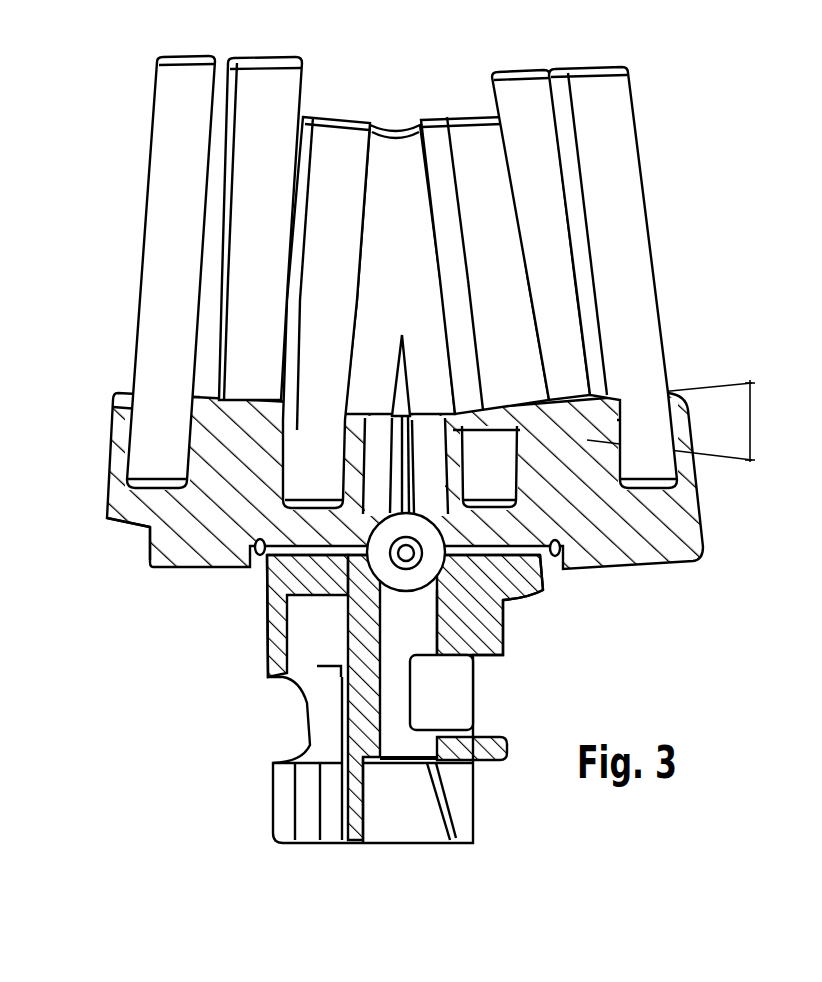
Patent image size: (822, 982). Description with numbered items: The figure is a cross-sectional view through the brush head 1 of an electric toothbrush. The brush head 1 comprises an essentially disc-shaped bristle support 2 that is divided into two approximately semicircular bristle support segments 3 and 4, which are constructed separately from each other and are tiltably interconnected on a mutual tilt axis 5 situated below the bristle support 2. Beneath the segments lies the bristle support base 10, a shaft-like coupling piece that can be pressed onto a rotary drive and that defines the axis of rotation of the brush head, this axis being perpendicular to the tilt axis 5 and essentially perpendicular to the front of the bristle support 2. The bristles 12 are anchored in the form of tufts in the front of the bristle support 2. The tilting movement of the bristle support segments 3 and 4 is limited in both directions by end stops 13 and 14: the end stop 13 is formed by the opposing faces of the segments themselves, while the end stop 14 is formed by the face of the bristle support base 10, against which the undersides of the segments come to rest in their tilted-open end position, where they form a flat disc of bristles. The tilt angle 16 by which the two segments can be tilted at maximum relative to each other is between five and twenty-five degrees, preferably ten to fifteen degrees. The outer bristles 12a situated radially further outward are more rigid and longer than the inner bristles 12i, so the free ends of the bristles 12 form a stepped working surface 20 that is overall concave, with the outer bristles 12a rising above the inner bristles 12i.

The brush head 1 is at (696, 238).
The bristle support 2 is at (722, 497).
The bristle support segment 3 is at (647, 553).
The bristle support segment 4 is at (117, 519).
The tilt axis 5 is at (406, 557).
The bristle support base 10 is at (487, 635).
The bristles 12 is at (165, 262).
The outer bristles 12a is at (614, 103).
The inner bristles 12i is at (330, 142).
The end stop 13 is at (408, 413).
The end stop 14 is at (540, 597).
The tilt angle 16 is at (752, 420).
The working surface 20 is at (415, 117).